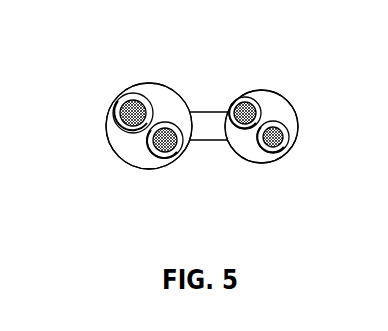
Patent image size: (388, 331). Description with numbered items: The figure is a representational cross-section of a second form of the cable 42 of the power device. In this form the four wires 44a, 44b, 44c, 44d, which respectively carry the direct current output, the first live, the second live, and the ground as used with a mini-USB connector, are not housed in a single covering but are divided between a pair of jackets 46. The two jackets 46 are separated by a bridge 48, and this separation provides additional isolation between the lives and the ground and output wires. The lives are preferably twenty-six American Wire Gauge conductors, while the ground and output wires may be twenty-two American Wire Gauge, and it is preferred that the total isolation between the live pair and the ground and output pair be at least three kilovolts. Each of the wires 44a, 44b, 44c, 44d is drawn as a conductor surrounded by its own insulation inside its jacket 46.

The cable 42 is at (96, 47).
The wire 44a is at (250, 95).
The wire 44b is at (162, 151).
The wire 44c is at (140, 94).
The wire 44d is at (271, 153).
The jacket 46 is at (108, 146).
The bridge 48 is at (215, 141).